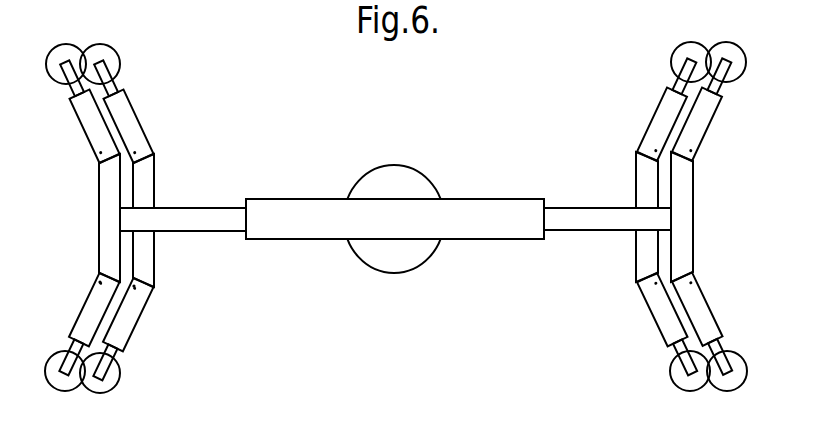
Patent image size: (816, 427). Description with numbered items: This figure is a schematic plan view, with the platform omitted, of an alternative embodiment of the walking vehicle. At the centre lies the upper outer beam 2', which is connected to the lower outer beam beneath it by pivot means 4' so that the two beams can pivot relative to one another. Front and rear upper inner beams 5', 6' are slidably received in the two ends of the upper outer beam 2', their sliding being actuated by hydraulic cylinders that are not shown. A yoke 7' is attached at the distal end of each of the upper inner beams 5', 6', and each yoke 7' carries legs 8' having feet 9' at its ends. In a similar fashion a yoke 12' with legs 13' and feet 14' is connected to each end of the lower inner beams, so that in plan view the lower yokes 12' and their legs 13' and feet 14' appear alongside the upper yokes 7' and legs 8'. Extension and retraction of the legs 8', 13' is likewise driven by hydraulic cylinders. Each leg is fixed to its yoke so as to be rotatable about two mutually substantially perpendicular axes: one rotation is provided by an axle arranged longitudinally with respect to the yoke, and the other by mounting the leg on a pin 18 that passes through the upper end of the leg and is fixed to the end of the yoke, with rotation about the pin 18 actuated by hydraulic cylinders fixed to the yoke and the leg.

The upper outer beam 2' is at (395, 250).
The pivot means 4' is at (404, 196).
The front upper inner beam 5' is at (607, 199).
The rear upper inner beam 6' is at (183, 198).
The yoke 7' is at (393, 217).
The legs 8' is at (382, 217).
The feet 9' is at (730, 213).
The yoke 12' is at (437, 219).
The legs 13' is at (395, 219).
The feet 14' is at (675, 221).
The pin 18 is at (100, 283).